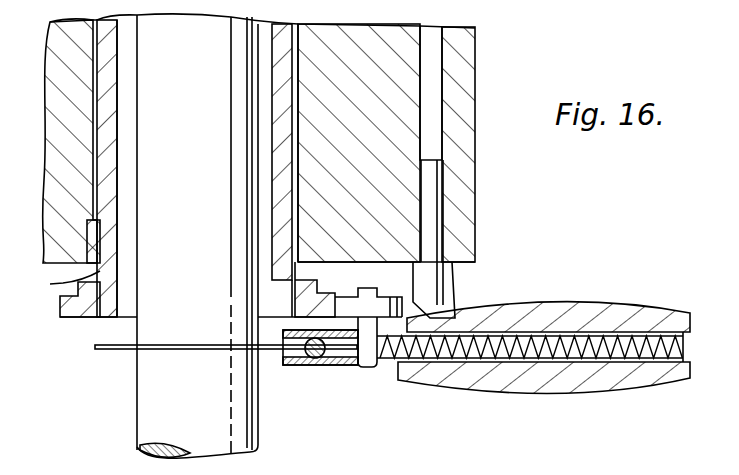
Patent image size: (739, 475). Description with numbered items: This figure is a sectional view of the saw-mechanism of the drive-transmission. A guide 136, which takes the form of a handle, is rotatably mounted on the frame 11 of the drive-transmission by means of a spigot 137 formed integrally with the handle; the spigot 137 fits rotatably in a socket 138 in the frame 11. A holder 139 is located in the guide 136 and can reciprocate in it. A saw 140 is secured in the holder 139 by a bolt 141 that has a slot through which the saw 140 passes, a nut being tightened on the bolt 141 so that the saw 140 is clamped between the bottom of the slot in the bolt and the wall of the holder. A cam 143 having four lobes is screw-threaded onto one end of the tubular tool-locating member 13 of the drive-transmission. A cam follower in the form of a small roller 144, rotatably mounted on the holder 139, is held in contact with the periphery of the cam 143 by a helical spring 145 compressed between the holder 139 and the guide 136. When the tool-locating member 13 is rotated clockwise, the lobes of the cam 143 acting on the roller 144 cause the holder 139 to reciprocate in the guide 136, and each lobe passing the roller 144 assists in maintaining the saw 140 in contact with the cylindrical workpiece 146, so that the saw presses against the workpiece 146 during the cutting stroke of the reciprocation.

The frame 11 is at (475, 163).
The tubular tool-locating member 13 is at (64, 162).
The guide 136 is at (556, 314).
The spigot 137 is at (432, 240).
The socket 138 is at (443, 133).
The holder 139 is at (383, 364).
The saw 140 is at (110, 352).
The bolt 141 is at (316, 358).
The cam 143 is at (75, 317).
The roller 144 is at (403, 298).
The helical spring 145 is at (638, 360).
The workpiece 146 is at (235, 430).